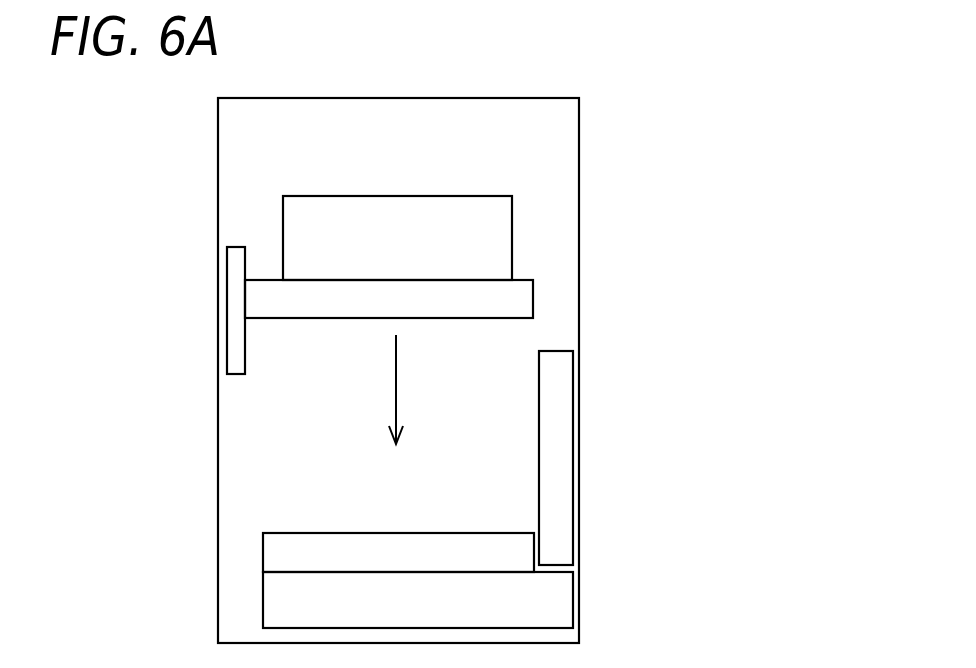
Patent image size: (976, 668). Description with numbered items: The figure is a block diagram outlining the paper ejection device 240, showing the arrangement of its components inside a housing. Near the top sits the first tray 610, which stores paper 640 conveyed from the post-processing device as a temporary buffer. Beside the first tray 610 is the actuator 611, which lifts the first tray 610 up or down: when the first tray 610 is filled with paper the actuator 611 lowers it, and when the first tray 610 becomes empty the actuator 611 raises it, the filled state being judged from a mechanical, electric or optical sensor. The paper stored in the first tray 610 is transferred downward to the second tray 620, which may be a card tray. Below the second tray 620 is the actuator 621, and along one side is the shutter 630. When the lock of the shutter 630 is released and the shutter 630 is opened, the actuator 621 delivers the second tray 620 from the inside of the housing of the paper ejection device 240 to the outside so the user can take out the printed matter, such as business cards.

The paper ejection device 240 is at (493, 78).
The first tray 610 is at (522, 299).
The actuator 611 is at (237, 260).
The second tray 620 is at (271, 552).
The actuator 621 is at (558, 599).
The shutter 630 is at (560, 380).
The paper 640 is at (498, 238).